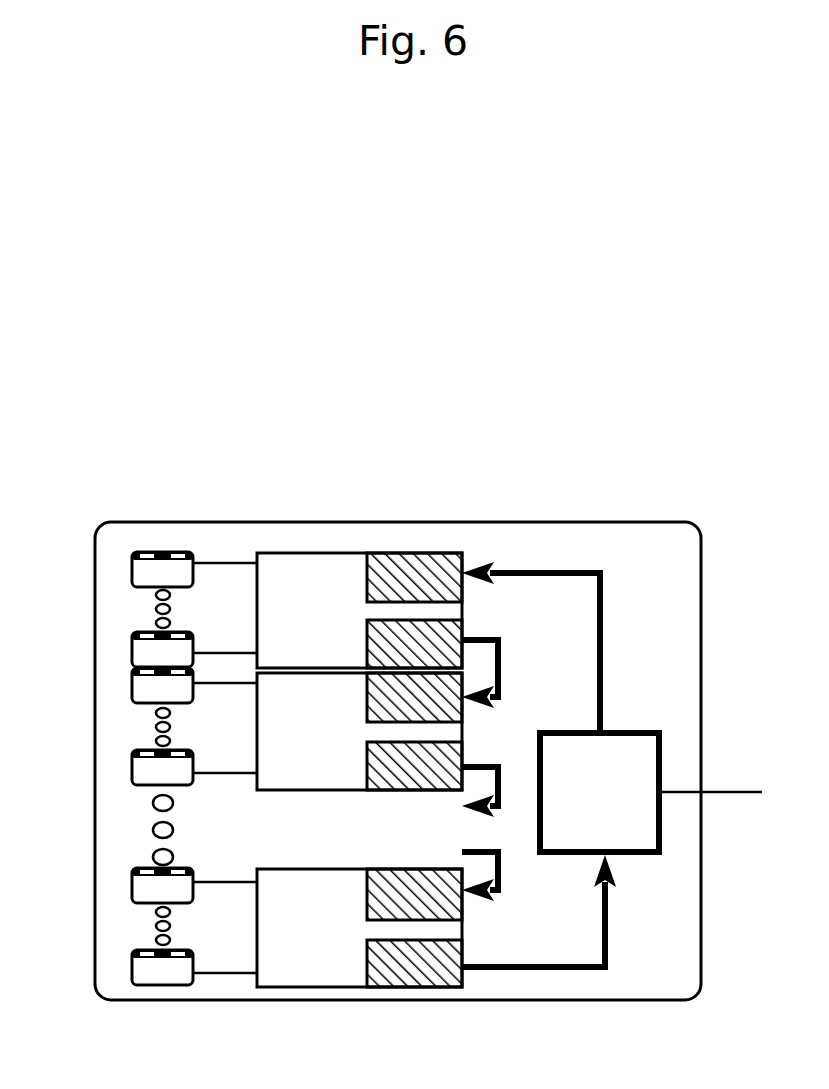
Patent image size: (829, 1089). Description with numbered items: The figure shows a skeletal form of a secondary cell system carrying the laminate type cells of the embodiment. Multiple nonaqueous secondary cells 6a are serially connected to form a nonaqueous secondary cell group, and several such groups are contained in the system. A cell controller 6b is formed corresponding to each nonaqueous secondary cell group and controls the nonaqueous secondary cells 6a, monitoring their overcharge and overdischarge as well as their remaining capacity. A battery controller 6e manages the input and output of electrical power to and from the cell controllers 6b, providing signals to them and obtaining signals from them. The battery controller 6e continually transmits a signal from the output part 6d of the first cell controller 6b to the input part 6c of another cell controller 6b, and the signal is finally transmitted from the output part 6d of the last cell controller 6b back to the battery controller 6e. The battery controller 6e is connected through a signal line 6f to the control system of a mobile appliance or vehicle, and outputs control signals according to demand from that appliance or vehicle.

The nonaqueous secondary cell 6a is at (133, 648).
The cell controller 6b is at (325, 553).
The input part 6c is at (400, 565).
The output part 6d is at (447, 637).
The battery controller 6e is at (615, 804).
The signal line 6f is at (737, 792).